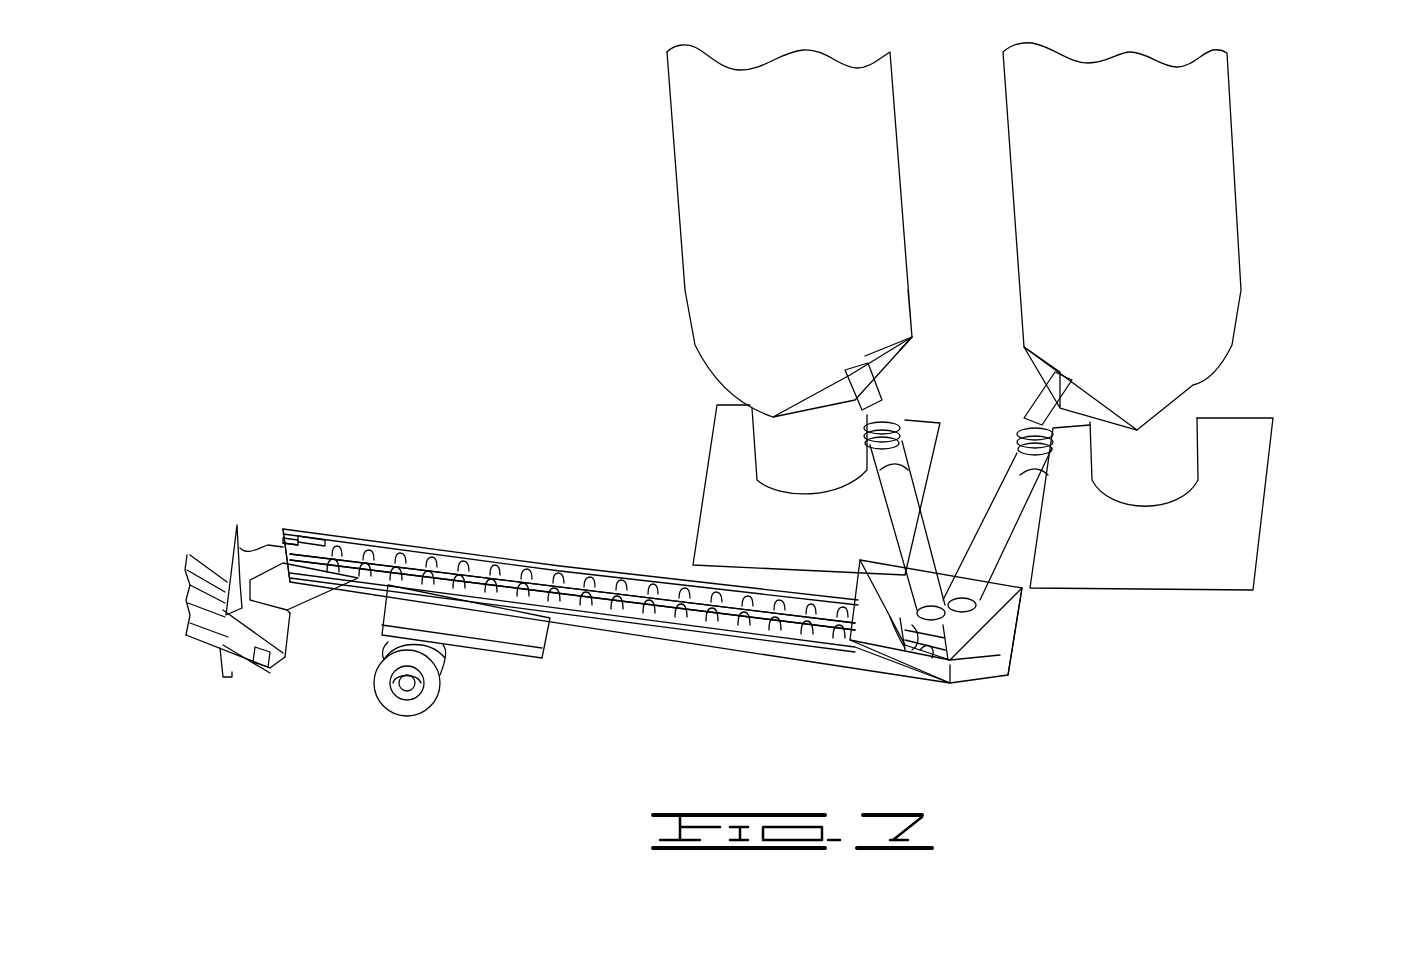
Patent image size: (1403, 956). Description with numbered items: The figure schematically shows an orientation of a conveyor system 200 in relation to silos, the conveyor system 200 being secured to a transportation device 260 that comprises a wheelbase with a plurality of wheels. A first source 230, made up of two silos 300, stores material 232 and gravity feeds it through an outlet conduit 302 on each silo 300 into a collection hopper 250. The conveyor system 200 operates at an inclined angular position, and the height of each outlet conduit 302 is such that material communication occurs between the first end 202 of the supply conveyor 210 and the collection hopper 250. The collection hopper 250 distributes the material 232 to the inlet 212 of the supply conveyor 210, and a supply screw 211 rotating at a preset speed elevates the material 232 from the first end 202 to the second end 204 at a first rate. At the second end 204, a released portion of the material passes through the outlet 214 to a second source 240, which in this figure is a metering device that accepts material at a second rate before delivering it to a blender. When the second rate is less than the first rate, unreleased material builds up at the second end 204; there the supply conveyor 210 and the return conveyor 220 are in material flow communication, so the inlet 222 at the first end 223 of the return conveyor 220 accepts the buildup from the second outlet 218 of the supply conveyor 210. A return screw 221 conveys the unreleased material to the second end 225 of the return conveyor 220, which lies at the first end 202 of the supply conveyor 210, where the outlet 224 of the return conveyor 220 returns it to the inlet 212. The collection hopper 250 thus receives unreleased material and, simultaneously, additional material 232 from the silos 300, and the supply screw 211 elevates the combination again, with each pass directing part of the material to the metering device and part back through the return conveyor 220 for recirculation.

The conveyor system 200 is at (542, 434).
The first end of supply conveyor 202 is at (968, 702).
The second end of supply conveyor 204 is at (258, 522).
The supply conveyor 210 is at (635, 633).
The supply screw 211 is at (712, 640).
The inlet of supply conveyor 212 is at (935, 665).
The outlet 214 is at (320, 600).
The second outlet of supply conveyor 218 is at (320, 534).
The return conveyor 220 is at (553, 560).
The return screw 221 is at (643, 575).
The inlet of return conveyor 222 is at (355, 540).
The first end of return conveyor 223 is at (290, 528).
The outlet of return conveyor 224 is at (905, 640).
The second end of return conveyor 225 is at (958, 650).
The first source 230 is at (675, 183).
The material 232 is at (950, 628).
The second source 240 is at (248, 667).
The collection hopper 250 is at (1000, 680).
The transportation device 260 is at (457, 688).
The silo 300 is at (816, 490).
The outlet conduit 302 is at (920, 555).